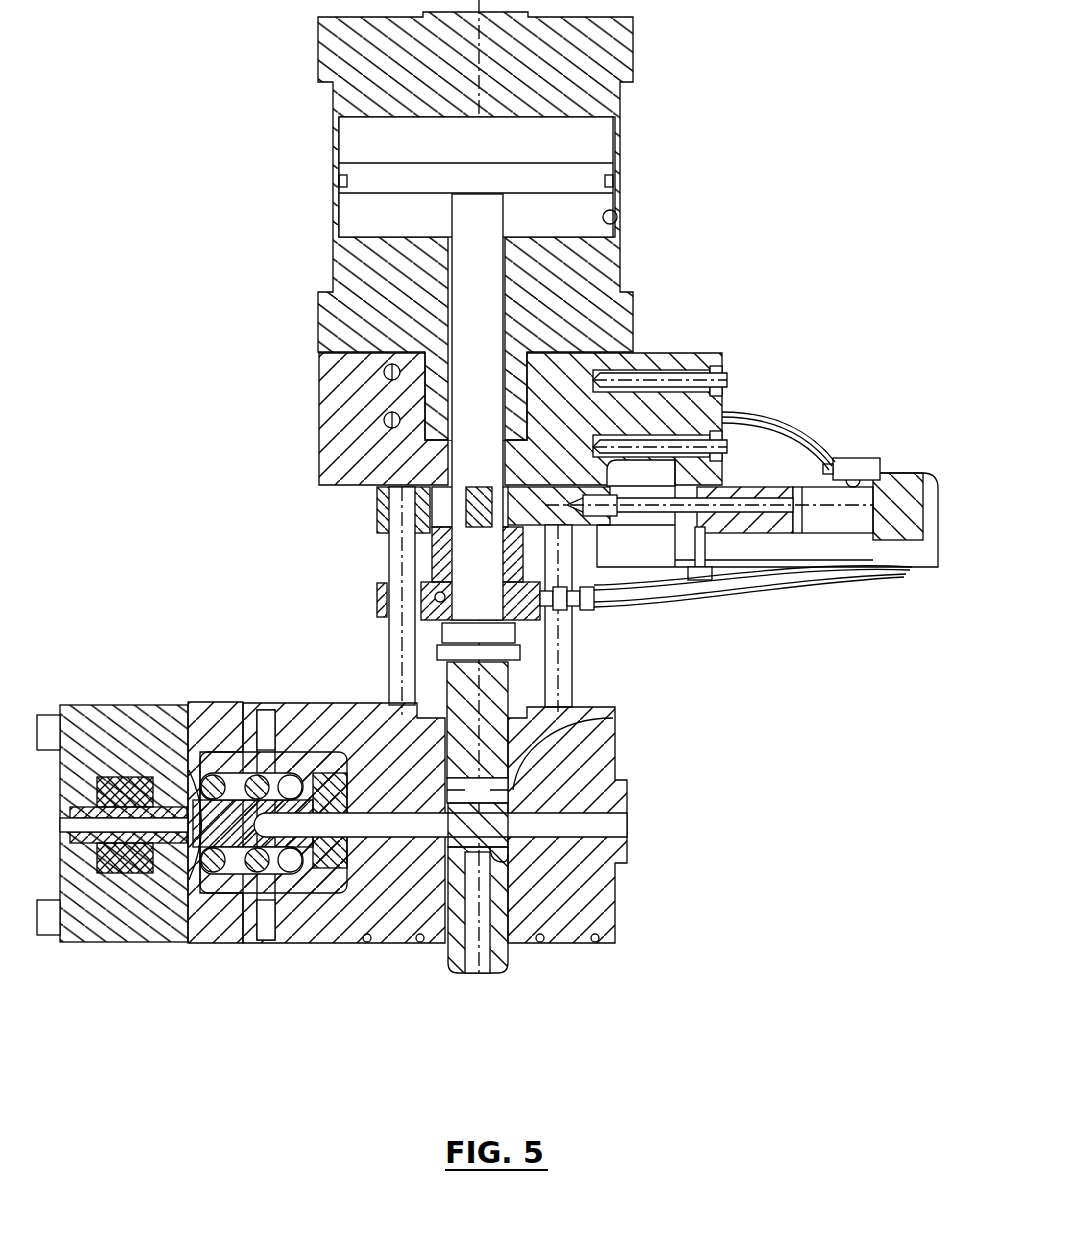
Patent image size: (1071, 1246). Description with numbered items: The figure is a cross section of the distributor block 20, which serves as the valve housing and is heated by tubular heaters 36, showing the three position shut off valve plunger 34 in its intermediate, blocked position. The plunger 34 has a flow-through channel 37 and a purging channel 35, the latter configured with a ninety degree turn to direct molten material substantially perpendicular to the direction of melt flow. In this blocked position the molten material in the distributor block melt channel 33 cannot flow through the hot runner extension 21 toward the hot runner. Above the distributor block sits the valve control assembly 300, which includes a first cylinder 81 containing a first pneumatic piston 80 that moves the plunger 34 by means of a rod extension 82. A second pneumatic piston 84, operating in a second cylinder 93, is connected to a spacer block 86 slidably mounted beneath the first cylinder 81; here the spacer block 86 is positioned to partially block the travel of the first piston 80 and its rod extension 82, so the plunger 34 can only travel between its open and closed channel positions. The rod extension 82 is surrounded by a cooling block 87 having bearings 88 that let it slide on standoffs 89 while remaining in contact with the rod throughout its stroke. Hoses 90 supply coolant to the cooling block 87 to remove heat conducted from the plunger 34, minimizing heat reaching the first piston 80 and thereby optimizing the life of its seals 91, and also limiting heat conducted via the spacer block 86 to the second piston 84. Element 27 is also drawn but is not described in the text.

The valve control assembly 300 is at (256, 313).
The first pneumatic piston 80 is at (575, 178).
The first cylinder 81 is at (618, 225).
The seals 91 is at (333, 178).
The hoses 90 is at (793, 435).
The second cylinder 93 is at (855, 457).
The second pneumatic piston 84 is at (797, 517).
The spacer block 86 is at (545, 503).
The standoffs 89 is at (397, 545).
The cooling block 87 is at (440, 563).
The bearings 88 is at (380, 592).
The rod extension 82 is at (480, 588).
The flow-through channel 37 is at (492, 787).
The distributor block melt channel 33 is at (590, 822).
The distributor block 20 is at (562, 907).
The tubular heaters 36 is at (363, 945).
The hot runner extension 21 is at (203, 942).
The end cap 27 is at (100, 945).
The shut off valve plunger 34 is at (452, 975).
The purging channel 35 is at (484, 975).